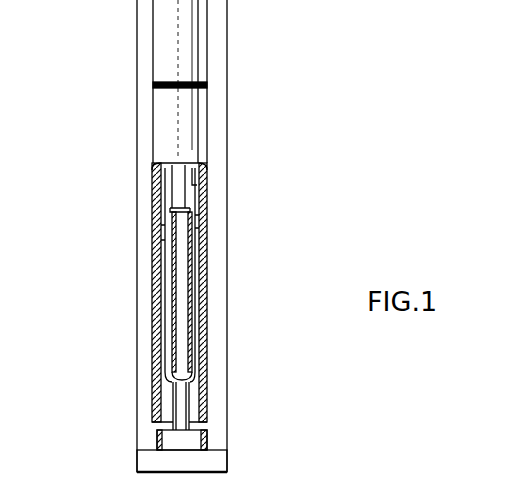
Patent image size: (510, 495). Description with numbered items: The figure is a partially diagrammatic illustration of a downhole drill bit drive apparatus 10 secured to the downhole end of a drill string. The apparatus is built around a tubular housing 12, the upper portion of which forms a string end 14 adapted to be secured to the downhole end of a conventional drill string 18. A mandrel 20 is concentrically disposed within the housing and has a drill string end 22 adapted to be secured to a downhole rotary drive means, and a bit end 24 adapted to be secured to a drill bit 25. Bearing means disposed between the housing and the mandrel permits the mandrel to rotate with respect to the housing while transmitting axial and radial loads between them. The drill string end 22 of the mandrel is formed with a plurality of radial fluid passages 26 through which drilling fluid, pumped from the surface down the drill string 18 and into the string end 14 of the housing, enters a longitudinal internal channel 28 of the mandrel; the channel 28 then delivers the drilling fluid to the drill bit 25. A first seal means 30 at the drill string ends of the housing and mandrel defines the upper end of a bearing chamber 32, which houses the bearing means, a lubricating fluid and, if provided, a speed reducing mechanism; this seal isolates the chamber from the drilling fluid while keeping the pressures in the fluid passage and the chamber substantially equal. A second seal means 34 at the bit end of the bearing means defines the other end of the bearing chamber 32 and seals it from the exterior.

The downhole drill bit drive apparatus 10 is at (146, 137).
The tubular housing 12 is at (150, 288).
The string end 14 is at (153, 95).
The drill string 18 is at (153, 35).
The mandrel 20 is at (199, 284).
The drill string end 22 is at (201, 185).
The bit end 24 is at (208, 410).
The drill bit 25 is at (188, 461).
The radial fluid passages 26 is at (165, 232).
The longitudinal internal channel 28 is at (192, 333).
The first seal means 30 is at (205, 244).
The bearing chamber 32 is at (160, 329).
The second seal means 34 is at (158, 408).